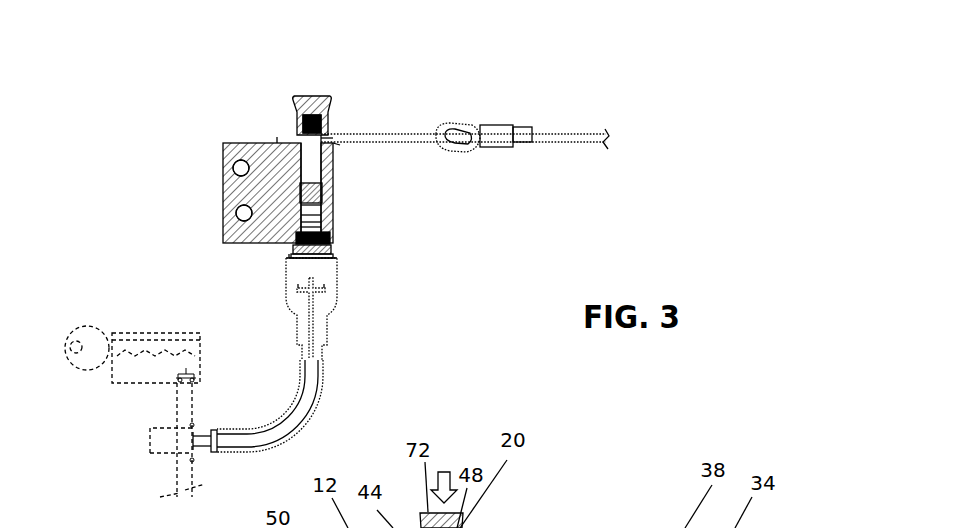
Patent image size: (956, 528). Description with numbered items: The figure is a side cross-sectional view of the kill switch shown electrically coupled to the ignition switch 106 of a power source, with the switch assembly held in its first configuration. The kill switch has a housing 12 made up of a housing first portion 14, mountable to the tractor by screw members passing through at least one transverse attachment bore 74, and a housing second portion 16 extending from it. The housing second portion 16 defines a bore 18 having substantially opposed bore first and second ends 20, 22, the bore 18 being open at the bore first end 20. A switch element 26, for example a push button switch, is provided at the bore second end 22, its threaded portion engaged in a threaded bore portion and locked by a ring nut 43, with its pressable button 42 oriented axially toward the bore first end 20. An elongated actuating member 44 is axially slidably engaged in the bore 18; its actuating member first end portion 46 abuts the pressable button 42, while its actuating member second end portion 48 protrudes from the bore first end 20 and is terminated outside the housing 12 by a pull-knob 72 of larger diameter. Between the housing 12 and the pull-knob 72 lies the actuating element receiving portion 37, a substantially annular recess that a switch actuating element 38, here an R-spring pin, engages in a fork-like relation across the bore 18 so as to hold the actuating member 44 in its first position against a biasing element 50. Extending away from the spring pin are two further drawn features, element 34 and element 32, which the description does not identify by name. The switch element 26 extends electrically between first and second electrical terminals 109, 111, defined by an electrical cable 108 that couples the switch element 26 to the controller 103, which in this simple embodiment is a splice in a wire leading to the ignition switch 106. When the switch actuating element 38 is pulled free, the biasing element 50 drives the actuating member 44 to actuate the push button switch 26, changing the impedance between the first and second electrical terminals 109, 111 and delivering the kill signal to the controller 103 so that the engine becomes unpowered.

The housing 12 is at (231, 141).
The housing first portion 14 is at (238, 236).
The housing second portion 16 is at (334, 180).
The bore 18 is at (334, 158).
The bore first end 20 is at (323, 136).
The bore second end 22 is at (333, 247).
The switch element 26 is at (337, 295).
The cable 32 is at (590, 135).
The cable end connector 34 is at (455, 122).
The actuating element receiving portion 37 is at (334, 143).
The switch actuating element 38 is at (400, 133).
The pressable button 42 is at (331, 230).
The ring nut 43 is at (287, 260).
The actuating member 44 is at (309, 163).
The actuating member first end portion 46 is at (331, 215).
The actuating member second end portion 48 is at (317, 95).
The biasing element 50 is at (300, 190).
The pull-knob 72 is at (297, 95).
The attachment bore 74 is at (237, 168).
The controller 103 is at (150, 453).
The ignition switch 106 is at (115, 383).
The electrical cable 108 is at (297, 415).
The first electrical terminal 109 is at (209, 436).
The second electrical terminal 111 is at (205, 446).